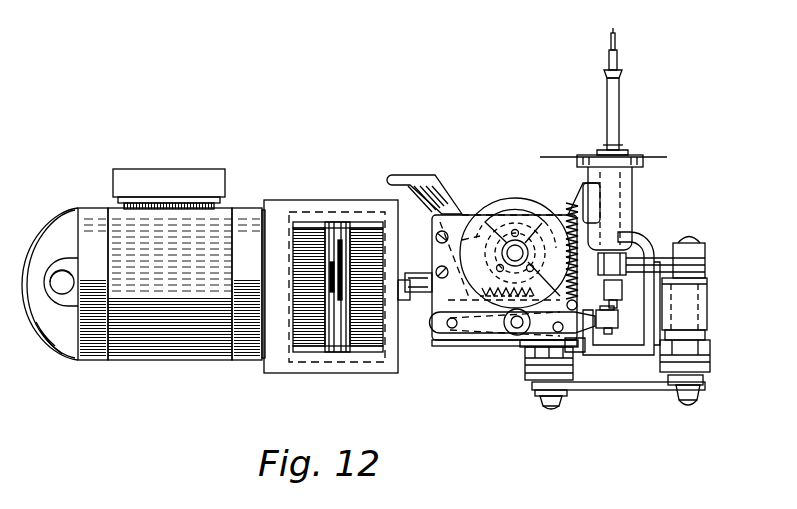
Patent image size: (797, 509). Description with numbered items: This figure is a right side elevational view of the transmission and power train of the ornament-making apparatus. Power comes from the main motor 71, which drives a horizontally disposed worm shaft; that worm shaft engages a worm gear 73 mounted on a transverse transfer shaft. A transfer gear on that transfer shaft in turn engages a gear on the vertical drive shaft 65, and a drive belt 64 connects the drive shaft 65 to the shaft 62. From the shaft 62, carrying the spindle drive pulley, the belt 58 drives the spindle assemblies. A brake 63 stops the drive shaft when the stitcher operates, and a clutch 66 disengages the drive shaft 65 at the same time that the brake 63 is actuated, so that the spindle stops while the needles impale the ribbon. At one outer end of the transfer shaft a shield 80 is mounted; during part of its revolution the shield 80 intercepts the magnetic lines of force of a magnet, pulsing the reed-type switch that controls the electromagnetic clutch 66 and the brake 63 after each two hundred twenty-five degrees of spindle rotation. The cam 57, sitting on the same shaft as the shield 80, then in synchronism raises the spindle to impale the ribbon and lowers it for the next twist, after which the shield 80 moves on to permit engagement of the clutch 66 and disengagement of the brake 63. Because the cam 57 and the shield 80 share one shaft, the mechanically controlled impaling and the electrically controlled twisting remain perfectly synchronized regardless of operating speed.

The main motor 71 is at (148, 360).
The shield 80 is at (533, 203).
The cam 57 is at (511, 218).
The worm gear 73 is at (510, 297).
The clutch 66 is at (525, 355).
The drive shaft 65 is at (550, 408).
The drive belt 64 is at (636, 392).
The shaft 62 is at (708, 330).
The brake 63 is at (711, 366).
The belt 58 is at (708, 273).